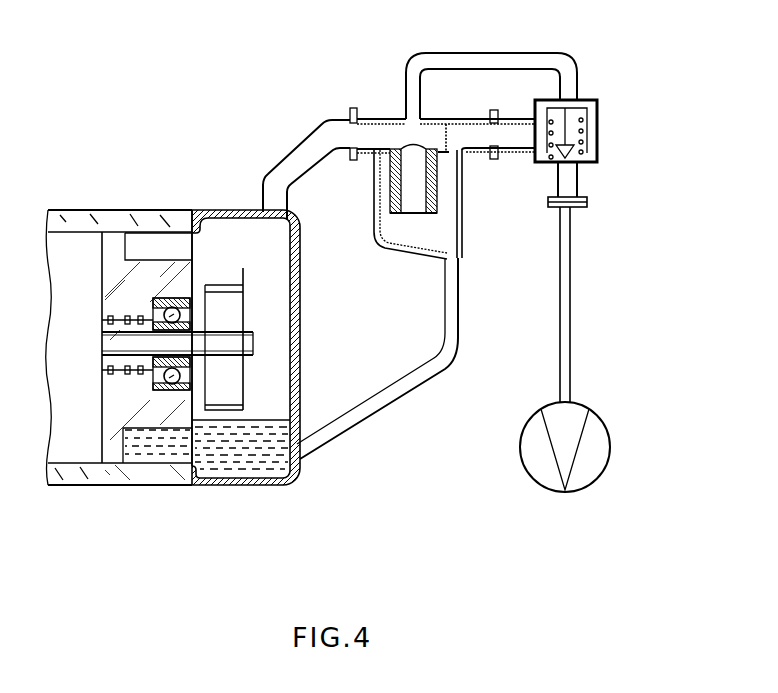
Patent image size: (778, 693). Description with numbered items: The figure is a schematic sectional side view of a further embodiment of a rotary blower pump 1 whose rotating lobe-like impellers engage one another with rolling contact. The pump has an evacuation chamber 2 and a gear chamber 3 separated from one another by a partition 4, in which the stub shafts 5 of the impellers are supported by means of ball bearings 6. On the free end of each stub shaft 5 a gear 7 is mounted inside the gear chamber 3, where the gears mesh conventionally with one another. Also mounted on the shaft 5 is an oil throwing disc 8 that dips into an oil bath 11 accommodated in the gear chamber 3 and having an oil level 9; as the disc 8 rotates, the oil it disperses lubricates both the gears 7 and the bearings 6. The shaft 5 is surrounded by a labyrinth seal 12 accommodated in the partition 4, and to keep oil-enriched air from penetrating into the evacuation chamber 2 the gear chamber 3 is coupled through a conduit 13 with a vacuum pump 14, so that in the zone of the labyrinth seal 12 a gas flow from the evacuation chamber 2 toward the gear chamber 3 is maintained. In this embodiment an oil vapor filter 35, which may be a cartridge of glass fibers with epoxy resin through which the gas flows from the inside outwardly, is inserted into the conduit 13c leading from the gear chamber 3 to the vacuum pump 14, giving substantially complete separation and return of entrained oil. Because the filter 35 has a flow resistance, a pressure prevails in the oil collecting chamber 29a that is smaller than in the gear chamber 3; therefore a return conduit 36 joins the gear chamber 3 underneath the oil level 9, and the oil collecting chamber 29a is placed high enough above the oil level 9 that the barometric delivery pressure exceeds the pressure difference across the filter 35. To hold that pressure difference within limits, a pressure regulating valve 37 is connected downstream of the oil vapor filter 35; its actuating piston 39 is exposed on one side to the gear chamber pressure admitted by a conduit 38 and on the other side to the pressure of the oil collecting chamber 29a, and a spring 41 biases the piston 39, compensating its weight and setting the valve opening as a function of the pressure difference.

The rotary blower pump 1 is at (178, 202).
The evacuation chamber 2 is at (80, 266).
The gear chamber 3 is at (283, 248).
The partition 4 is at (150, 484).
The stub shaft 5 is at (254, 341).
The ball bearing 6 is at (160, 302).
The gear 7 is at (221, 300).
The oil throwing disc 8 is at (245, 275).
The oil level 9 is at (263, 412).
The oil bath 11 is at (250, 448).
The labyrinth seal 12 is at (96, 320).
The conduit 13 is at (561, 283).
The conduit 13c is at (329, 124).
The vacuum pump 14 is at (529, 457).
The oil collecting chamber 29a is at (464, 219).
The oil vapor filter 35 is at (390, 187).
The return conduit 36 is at (431, 368).
The pressure regulating valve 37 is at (607, 98).
The conduit 38 is at (484, 53).
The actuating piston 39 is at (590, 124).
The spring 41 is at (584, 152).